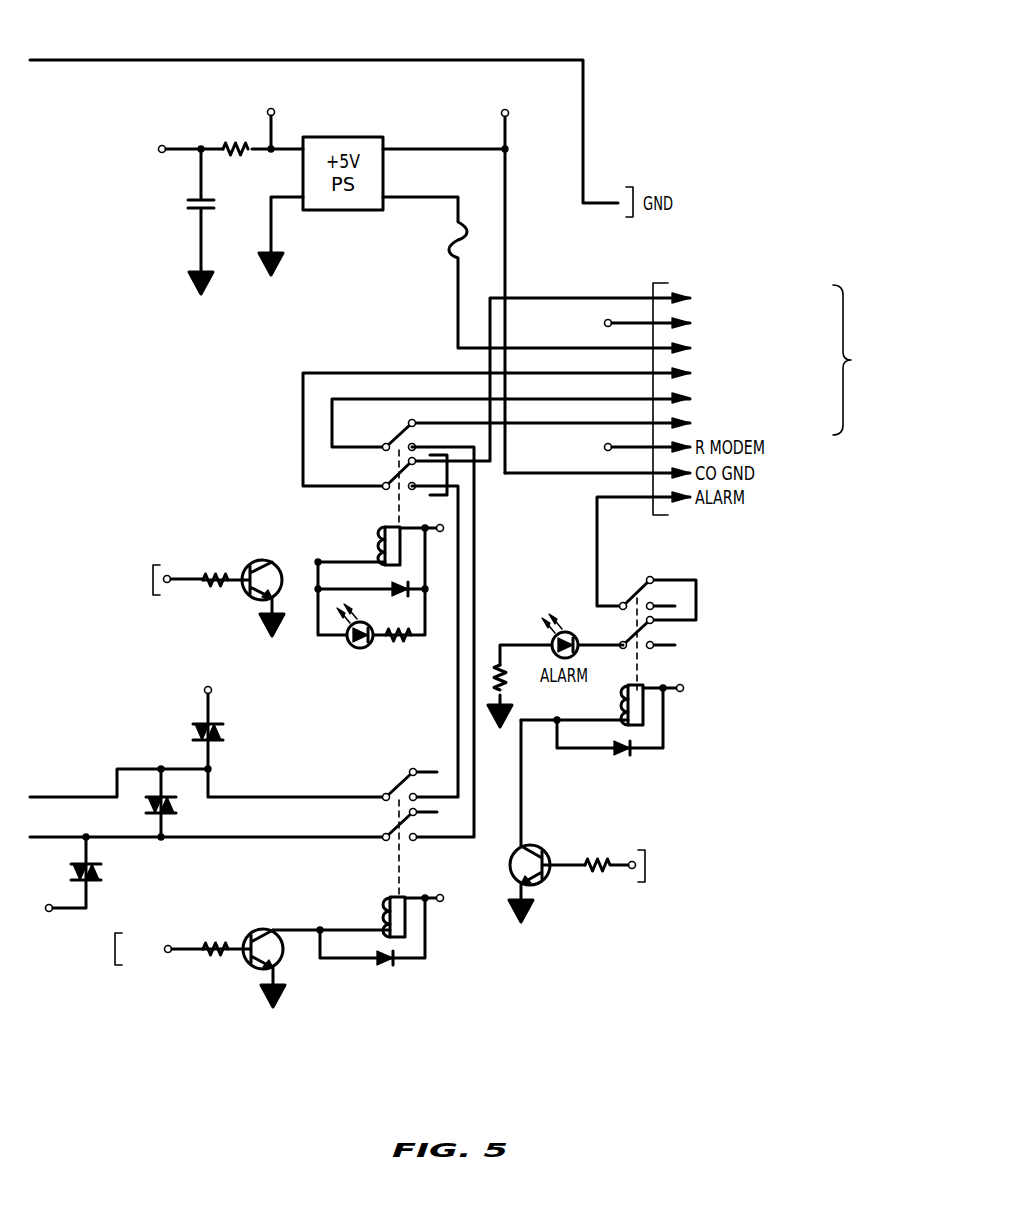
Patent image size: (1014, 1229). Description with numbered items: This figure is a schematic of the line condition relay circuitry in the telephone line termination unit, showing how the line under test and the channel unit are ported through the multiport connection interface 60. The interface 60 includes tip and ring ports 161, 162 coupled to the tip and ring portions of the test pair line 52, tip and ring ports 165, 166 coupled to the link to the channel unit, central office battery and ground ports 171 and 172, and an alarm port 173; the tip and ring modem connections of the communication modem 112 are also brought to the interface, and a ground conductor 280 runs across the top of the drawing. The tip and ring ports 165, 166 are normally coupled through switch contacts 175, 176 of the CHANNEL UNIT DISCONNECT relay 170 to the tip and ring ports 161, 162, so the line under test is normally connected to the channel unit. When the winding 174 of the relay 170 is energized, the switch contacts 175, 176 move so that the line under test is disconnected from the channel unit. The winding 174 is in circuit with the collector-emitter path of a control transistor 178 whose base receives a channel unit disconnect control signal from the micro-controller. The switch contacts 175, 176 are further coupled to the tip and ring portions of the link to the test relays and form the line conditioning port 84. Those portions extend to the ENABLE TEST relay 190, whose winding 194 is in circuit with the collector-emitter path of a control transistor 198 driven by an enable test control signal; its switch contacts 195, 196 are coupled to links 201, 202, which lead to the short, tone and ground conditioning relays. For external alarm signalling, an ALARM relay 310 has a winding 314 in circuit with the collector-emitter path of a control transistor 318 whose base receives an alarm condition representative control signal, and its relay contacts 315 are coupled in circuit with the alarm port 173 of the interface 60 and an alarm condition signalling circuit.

The ground line 280 is at (102, 60).
The central office ground port 172 is at (504, 110).
The central office battery port 171 is at (458, 298).
The multiport connection interface 60 is at (679, 268).
The test pair line 52 is at (783, 360).
The communication modem 112 is at (767, 323).
The tip port 165 is at (303, 456).
The ring port 166 is at (332, 418).
The switch contact 176 is at (393, 438).
The ring port 162 is at (433, 428).
The switch contact 175 is at (397, 479).
The tip port 161 is at (490, 439).
The line conditioning port 84 is at (447, 478).
The winding 174 is at (386, 527).
The CHANNEL UNIT DISCONNECT relay 170 is at (379, 562).
The control transistor 178 is at (262, 561).
The alarm port 173 is at (597, 514).
The relay contacts 315 is at (627, 640).
The winding 314 is at (645, 688).
The ALARM relay 310 is at (611, 706).
The control transistor 318 is at (532, 848).
The link 201 is at (94, 797).
The link 202 is at (48, 840).
The switch contact 195 is at (396, 786).
The switch contact 196 is at (384, 834).
The ENABLE TEST relay 190 is at (368, 882).
The winding 194 is at (406, 897).
The control transistor 198 is at (268, 929).